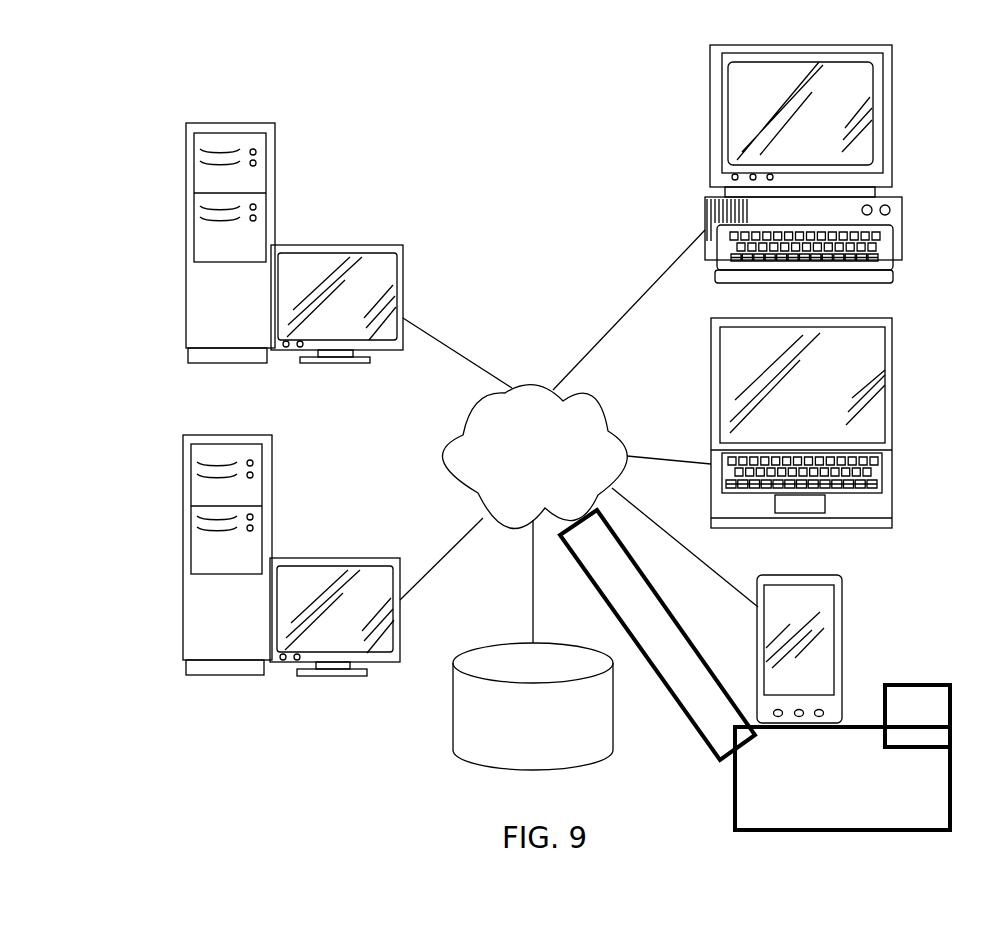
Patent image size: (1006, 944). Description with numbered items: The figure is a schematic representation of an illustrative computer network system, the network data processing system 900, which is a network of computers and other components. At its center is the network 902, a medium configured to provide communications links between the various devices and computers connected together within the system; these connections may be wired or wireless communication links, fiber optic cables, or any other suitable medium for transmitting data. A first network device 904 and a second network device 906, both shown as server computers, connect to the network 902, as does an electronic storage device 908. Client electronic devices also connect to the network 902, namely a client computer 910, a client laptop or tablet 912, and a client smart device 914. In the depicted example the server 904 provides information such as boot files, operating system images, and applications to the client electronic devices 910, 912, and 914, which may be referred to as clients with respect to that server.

The network data processing system 900 is at (512, 213).
The network 902 is at (611, 407).
The first network device 904 is at (186, 163).
The second network device 906 is at (183, 457).
The electronic storage device 908 is at (452, 702).
The client computer 910 is at (893, 80).
The client laptop or tablet 912 is at (893, 363).
The client smart device 914 is at (842, 620).